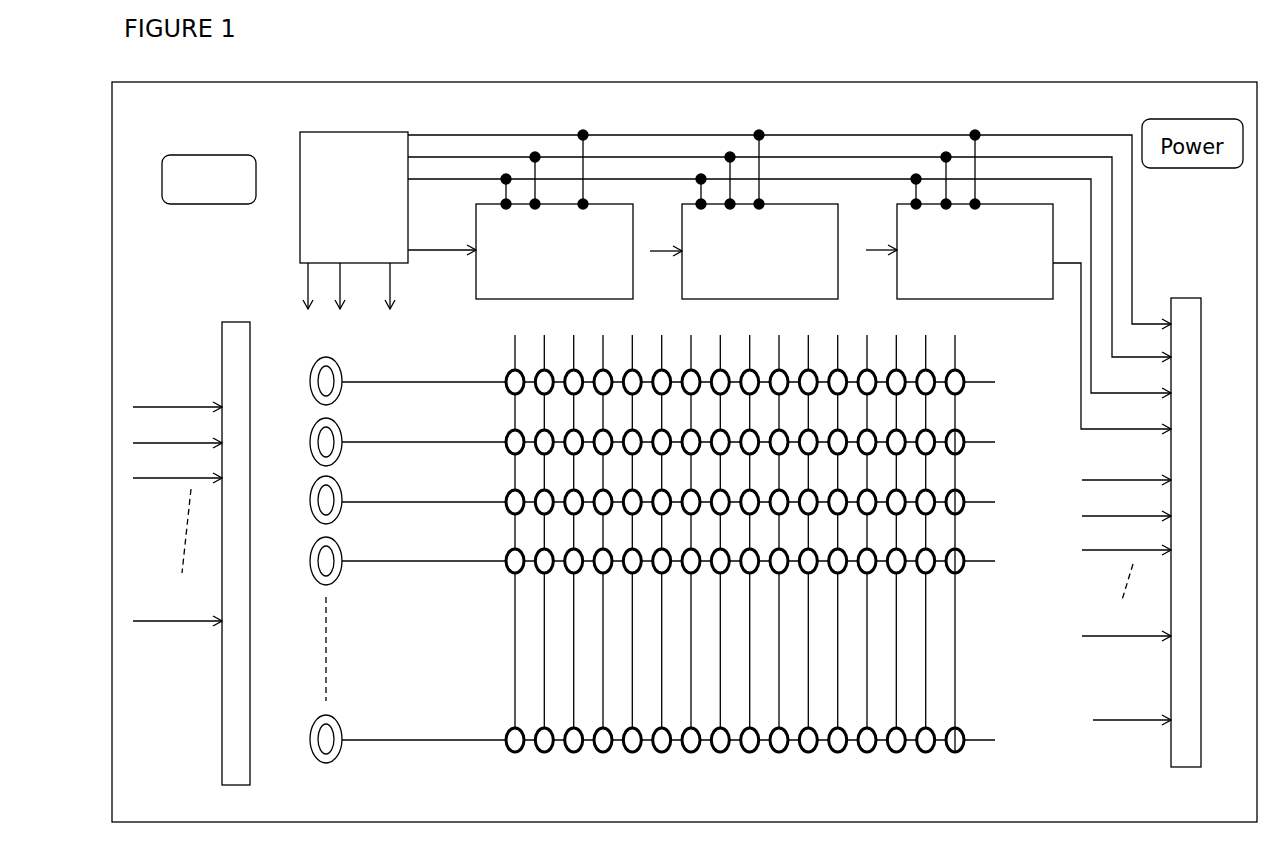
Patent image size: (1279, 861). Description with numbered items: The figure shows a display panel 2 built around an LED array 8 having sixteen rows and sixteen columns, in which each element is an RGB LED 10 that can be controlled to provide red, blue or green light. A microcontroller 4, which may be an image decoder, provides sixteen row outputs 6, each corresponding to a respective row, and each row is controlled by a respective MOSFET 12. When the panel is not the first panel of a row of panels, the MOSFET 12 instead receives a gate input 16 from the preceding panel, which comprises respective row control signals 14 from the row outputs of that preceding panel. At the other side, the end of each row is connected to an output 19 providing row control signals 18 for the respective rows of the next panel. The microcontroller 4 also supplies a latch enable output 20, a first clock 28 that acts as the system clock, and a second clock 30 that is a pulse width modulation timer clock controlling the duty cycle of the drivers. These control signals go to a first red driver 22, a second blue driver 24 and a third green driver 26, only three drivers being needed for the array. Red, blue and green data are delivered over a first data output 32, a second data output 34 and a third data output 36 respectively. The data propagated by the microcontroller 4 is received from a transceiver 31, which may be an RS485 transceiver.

The display panel 2 is at (1073, 82).
The transceiver 31 is at (227, 155).
The microcontroller 4 is at (375, 239).
The row outputs 6 is at (367, 263).
The second clock 30 is at (789, 216).
The first clock 28 is at (789, 248).
The latch enable output 20 is at (789, 277).
The first data output 32 is at (442, 255).
The first red driver 22 is at (530, 272).
The second data output 34 is at (660, 248).
The second blue driver 24 is at (751, 272).
The third data output 36 is at (873, 248).
The third green driver 26 is at (936, 272).
The gate input 16 is at (232, 322).
The row control signals 14 is at (180, 379).
The MOSFET 12 is at (343, 375).
The RGB LED 10 is at (967, 373).
The LED array 8 is at (713, 777).
The row control signals 18 is at (1080, 465).
The output 19 is at (1188, 297).